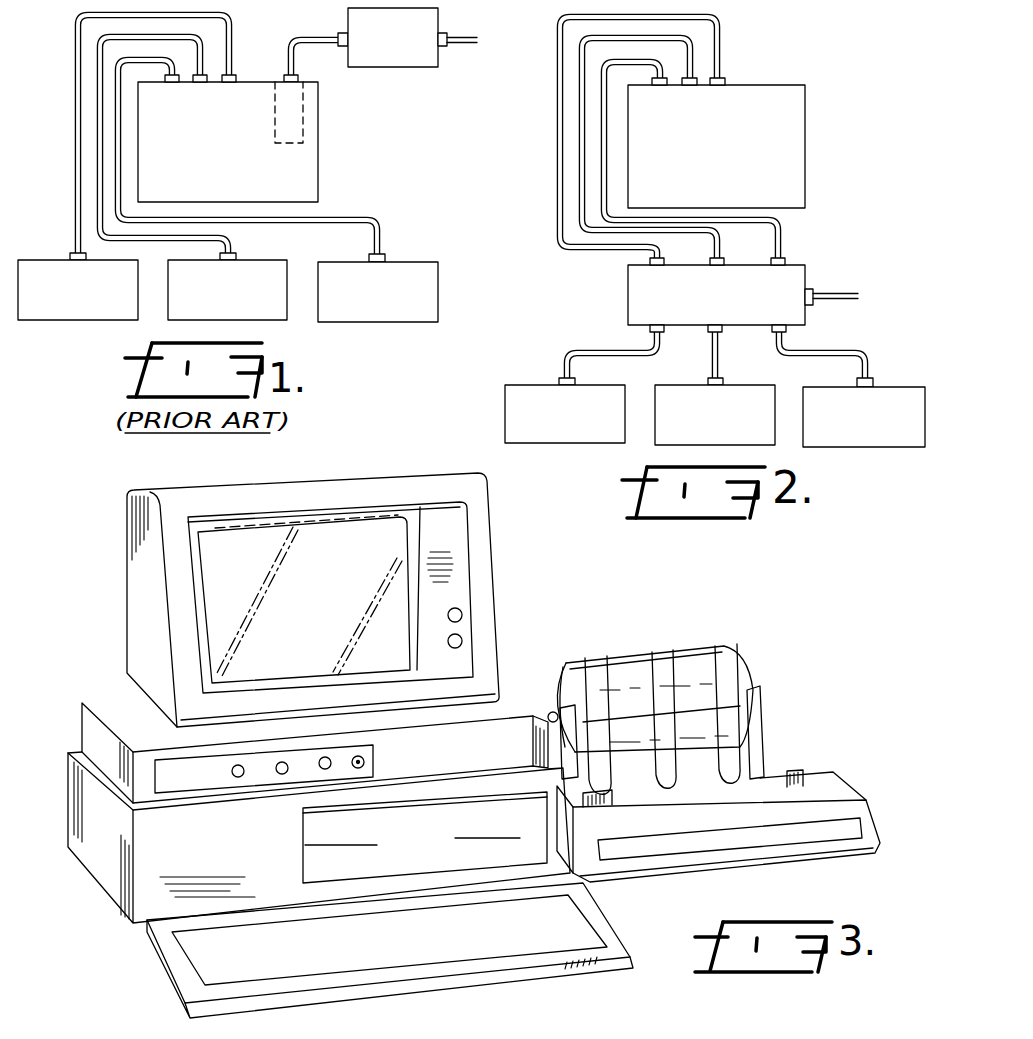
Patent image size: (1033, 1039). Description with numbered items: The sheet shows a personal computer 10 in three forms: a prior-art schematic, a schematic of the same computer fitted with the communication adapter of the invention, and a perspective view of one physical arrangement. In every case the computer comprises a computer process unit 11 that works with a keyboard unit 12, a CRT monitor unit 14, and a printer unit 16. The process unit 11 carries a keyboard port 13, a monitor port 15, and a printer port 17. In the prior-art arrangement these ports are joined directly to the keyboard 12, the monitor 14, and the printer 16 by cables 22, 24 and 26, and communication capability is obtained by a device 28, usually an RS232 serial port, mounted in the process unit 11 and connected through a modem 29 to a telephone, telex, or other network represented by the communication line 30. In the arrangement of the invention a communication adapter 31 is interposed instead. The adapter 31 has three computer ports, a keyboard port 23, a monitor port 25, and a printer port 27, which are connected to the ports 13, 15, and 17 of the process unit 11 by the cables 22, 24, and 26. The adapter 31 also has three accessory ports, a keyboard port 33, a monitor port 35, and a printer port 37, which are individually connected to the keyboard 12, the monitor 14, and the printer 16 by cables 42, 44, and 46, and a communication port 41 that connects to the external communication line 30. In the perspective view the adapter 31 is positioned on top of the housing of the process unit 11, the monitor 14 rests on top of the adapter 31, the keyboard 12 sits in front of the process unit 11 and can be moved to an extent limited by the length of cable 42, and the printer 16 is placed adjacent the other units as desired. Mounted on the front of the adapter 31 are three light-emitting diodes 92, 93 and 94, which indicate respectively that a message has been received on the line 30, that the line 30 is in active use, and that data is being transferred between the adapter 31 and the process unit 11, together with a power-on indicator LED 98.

In FIG. 1, the personal computer 10 is at (263, 187).
In FIG. 2, the personal computer 10 is at (715, 251).
In FIG. 3, the personal computer 10 is at (465, 740).
In FIG. 1, the computer process unit 11 is at (318, 182).
In FIG. 2, the computer process unit 11 is at (808, 190).
In FIG. 3, the computer process unit 11 is at (76, 801).
In FIG. 1, the keyboard unit 12 is at (100, 322).
In FIG. 2, the keyboard unit 12 is at (568, 445).
In FIG. 3, the keyboard unit 12 is at (410, 988).
In FIG. 1, the keyboard port 13 is at (237, 79).
In FIG. 2, the keyboard port 13 is at (728, 81).
In FIG. 1, the CRT monitor unit 14 is at (276, 323).
In FIG. 2, the CRT monitor unit 14 is at (655, 441).
In FIG. 3, the CRT monitor unit 14 is at (312, 492).
In FIG. 1, the monitor port 15 is at (208, 77).
In FIG. 2, the monitor port 15 is at (700, 78).
In FIG. 1, the printer unit 16 is at (373, 323).
In FIG. 2, the printer unit 16 is at (866, 450).
In FIG. 3, the printer unit 16 is at (843, 790).
In FIG. 1, the printer port 17 is at (165, 78).
In FIG. 2, the printer port 17 is at (652, 82).
In FIG. 1, the cable 22 is at (75, 216).
In FIG. 2, the cable 22 is at (557, 150).
In FIG. 2, the keyboard port 23 is at (642, 259).
In FIG. 1, the cable 24 is at (236, 250).
In FIG. 2, the cable 24 is at (578, 187).
In FIG. 2, the monitor port 25 is at (724, 260).
In FIG. 1, the cable 26 is at (383, 223).
In FIG. 2, the cable 26 is at (783, 228).
In FIG. 2, the printer port 27 is at (787, 259).
In FIG. 1, the device 28 is at (305, 127).
In FIG. 1, the modem 29 is at (410, 68).
In FIG. 1, the communication line 30 is at (460, 40).
In FIG. 2, the communication line 30 is at (856, 297).
In FIG. 2, the communication adapter 31 is at (622, 292).
In FIG. 3, the communication adapter 31 is at (309, 758).
In FIG. 2, the keyboard port 33 is at (648, 330).
In FIG. 2, the monitor port 35 is at (706, 334).
In FIG. 2, the printer port 37 is at (787, 333).
In FIG. 2, the communication port 41 is at (815, 290).
In FIG. 2, the cable 42 is at (568, 354).
In FIG. 2, the cable 44 is at (720, 366).
In FIG. 2, the cable 46 is at (875, 351).
In FIG. 3, the light-emitting diode 92 is at (282, 775).
In FIG. 3, the light-emitting diode 93 is at (330, 758).
In FIG. 3, the light-emitting diode 94 is at (365, 768).
In FIG. 3, the LED 98 is at (238, 778).